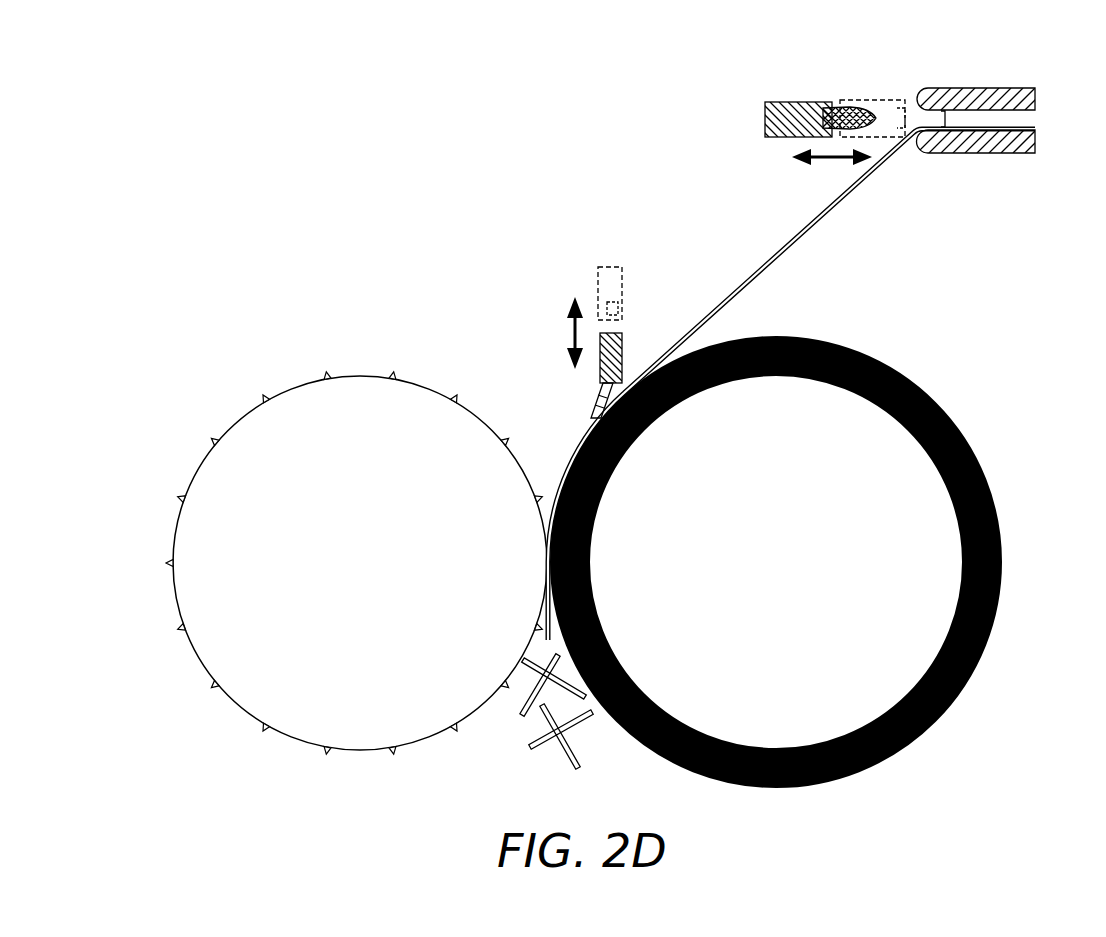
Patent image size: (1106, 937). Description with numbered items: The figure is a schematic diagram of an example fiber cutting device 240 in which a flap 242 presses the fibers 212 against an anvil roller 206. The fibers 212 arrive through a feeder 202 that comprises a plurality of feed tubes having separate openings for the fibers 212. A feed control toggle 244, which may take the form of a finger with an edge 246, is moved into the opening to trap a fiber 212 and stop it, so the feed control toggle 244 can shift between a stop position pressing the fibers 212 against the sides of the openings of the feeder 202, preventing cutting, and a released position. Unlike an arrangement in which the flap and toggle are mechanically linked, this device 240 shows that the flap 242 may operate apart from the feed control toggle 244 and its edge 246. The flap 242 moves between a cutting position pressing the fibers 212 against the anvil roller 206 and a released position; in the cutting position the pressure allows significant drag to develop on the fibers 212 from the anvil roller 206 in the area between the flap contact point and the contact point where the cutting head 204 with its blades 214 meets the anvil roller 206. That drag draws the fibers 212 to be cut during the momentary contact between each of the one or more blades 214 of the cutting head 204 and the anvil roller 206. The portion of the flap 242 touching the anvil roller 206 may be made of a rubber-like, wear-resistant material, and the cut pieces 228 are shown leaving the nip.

The feeder 202 is at (977, 153).
The cutting head 204 is at (404, 685).
The anvil roller 206 is at (885, 758).
The fibers 212 is at (812, 230).
The blades 214 is at (266, 728).
The stiffening elements 228 is at (589, 748).
The fiber cutting device 240 is at (901, 117).
The flap 242 is at (600, 373).
The feed control toggle 244 is at (810, 102).
The edge 246 is at (862, 132).